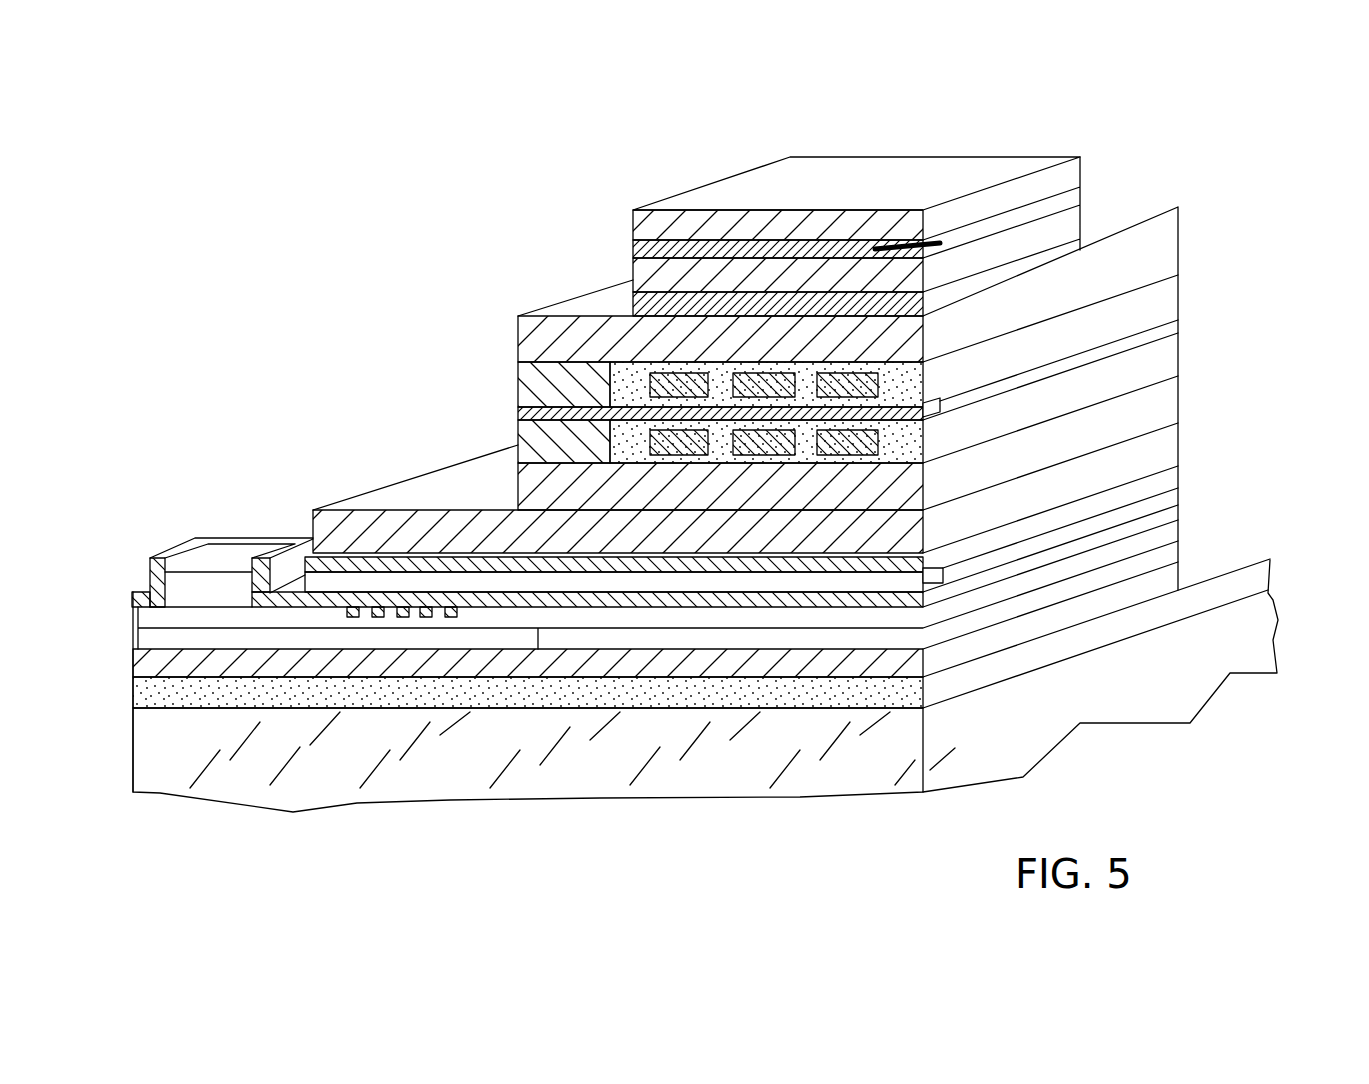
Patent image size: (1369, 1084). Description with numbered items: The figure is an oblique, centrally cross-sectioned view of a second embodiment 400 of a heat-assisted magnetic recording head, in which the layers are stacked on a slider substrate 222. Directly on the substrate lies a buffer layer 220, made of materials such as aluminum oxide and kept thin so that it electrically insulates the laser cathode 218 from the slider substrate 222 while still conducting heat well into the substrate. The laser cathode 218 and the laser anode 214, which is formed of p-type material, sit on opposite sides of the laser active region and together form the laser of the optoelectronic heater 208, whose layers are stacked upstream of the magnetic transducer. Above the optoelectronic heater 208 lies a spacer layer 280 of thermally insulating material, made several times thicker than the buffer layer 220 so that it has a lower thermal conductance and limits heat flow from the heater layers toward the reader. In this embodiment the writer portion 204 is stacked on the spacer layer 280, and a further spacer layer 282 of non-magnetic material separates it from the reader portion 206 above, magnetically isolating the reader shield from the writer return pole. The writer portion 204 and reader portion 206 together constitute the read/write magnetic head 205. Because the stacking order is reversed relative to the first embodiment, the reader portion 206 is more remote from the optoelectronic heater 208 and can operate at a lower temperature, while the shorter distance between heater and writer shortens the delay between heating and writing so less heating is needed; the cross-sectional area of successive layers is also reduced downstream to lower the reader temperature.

The second embodiment of a HAMR head 400 is at (709, 462).
The read/write magnetic head 205 is at (908, 370).
The reader portion 206 is at (823, 236).
The writer portion 204 is at (894, 398).
The spacer layer 282 is at (633, 312).
The spacer layer 280 is at (365, 493).
The optoelectronic heater 208 is at (704, 524).
The laser anode 214 is at (223, 556).
The laser cathode 218 is at (132, 657).
The buffer layer 220 is at (132, 686).
The slider substrate 222 is at (132, 750).